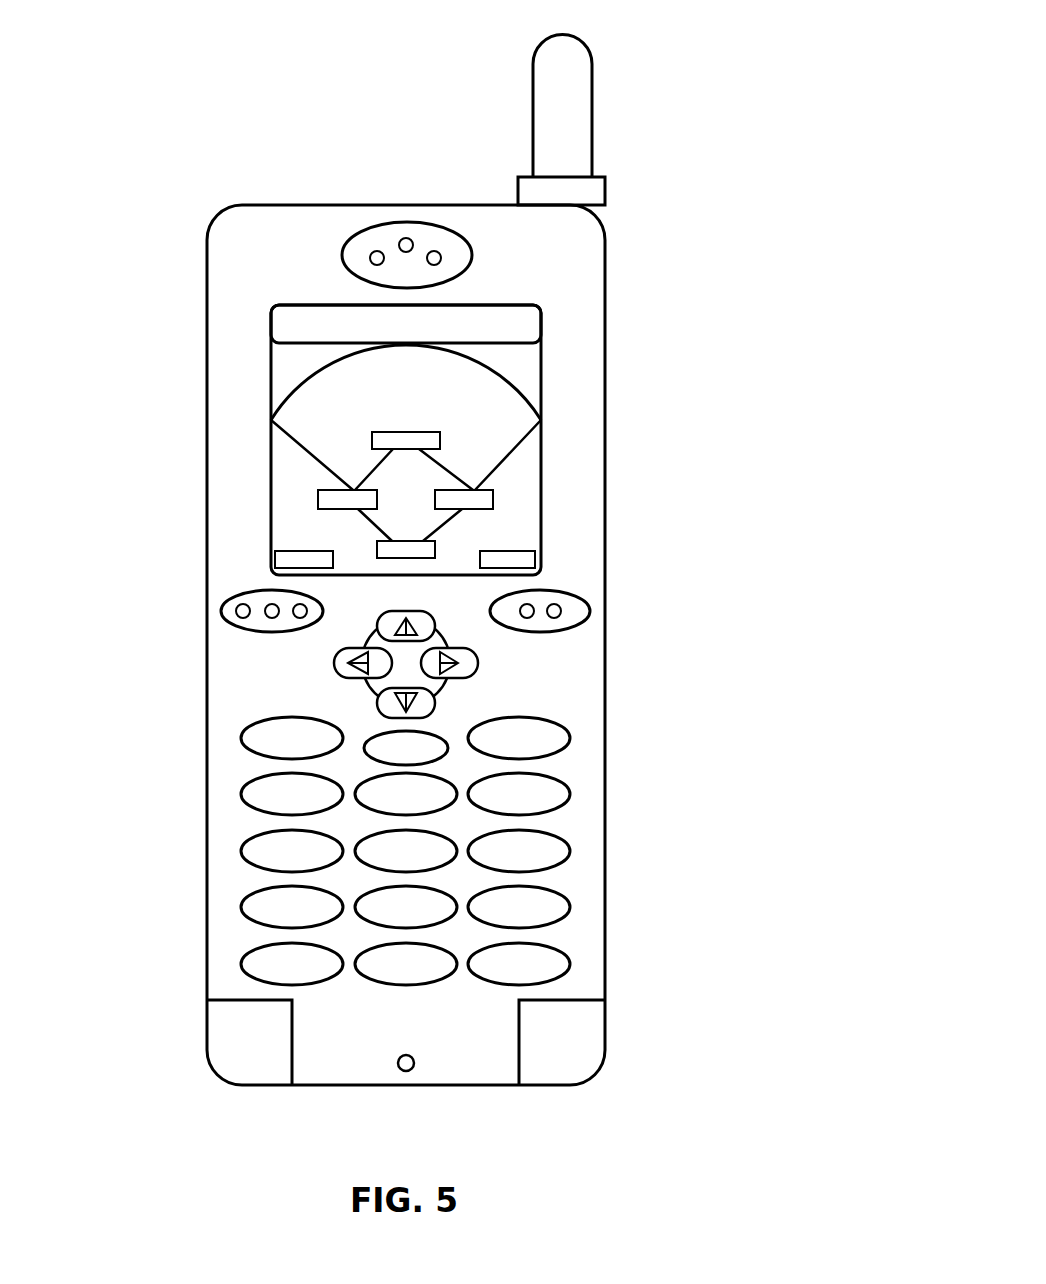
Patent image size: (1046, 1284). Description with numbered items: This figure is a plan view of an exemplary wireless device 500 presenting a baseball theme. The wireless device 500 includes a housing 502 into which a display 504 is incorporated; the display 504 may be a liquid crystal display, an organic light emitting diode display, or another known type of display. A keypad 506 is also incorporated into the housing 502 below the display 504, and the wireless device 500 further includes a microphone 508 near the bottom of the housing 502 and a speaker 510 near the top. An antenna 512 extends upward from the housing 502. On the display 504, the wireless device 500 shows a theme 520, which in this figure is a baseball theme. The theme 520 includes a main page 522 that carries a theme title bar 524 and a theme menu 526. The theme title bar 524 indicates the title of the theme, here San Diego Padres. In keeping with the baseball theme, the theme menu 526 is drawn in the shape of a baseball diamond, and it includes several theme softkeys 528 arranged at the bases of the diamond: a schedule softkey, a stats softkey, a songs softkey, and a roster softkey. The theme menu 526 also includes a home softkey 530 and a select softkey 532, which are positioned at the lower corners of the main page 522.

The wireless device 500 is at (805, 111).
The housing 502 is at (563, 247).
The display 504 is at (283, 300).
The keypad 506 is at (630, 596).
The microphone 508 is at (400, 1071).
The speaker 510 is at (378, 235).
The antenna 512 is at (568, 73).
The theme 520 is at (255, 308).
The main page 522 is at (523, 369).
The theme title bar 524 is at (525, 320).
The theme menu 526 is at (507, 415).
The theme softkeys 528 is at (495, 497).
The home softkey 530 is at (270, 566).
The select softkey 532 is at (535, 558).